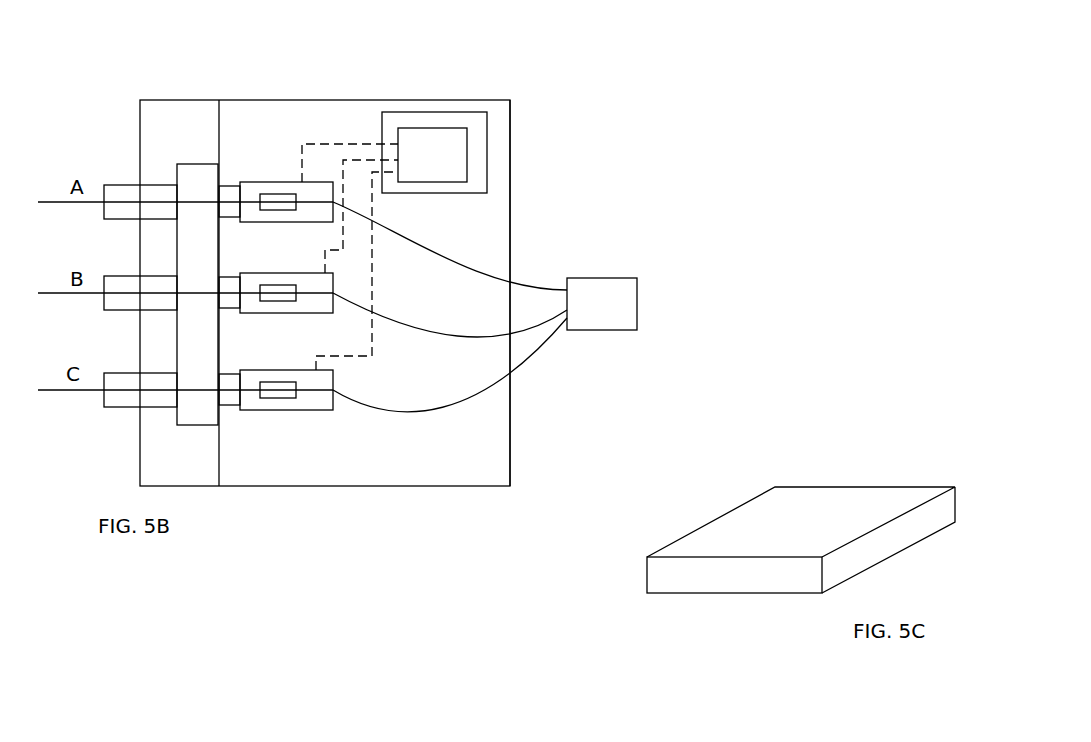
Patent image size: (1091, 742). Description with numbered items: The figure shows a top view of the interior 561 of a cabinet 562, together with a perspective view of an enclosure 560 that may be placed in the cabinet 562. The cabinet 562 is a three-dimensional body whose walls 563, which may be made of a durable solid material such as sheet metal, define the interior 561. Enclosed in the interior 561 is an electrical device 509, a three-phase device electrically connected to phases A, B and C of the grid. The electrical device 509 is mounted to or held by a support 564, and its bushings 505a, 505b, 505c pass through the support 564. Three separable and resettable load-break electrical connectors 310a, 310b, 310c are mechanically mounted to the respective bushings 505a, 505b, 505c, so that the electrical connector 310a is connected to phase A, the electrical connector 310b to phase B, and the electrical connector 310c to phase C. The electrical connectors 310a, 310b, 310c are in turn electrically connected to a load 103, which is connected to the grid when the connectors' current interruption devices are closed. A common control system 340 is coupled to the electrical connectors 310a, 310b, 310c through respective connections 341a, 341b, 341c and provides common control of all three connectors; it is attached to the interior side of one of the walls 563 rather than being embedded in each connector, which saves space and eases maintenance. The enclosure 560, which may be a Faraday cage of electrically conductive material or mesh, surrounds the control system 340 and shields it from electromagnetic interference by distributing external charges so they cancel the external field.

In FIG. 5B, the load 103 is at (602, 304).
In FIG. 5B, the electrical connector 310a is at (310, 183).
In FIG. 5B, the electrical connector 310b is at (323, 282).
In FIG. 5B, the electrical connector 310c is at (310, 396).
In FIG. 5B, the control system 340 is at (432, 155).
In FIG. 5B, the connection 341a is at (348, 141).
In FIG. 5B, the connection 341b is at (343, 168).
In FIG. 5B, the connection 341c is at (375, 333).
In FIG. 5B, the bushing 505a is at (230, 187).
In FIG. 5B, the bushing 505b is at (243, 284).
In FIG. 5B, the bushing 505c is at (227, 377).
In FIG. 5B, the electrical device 509 is at (198, 170).
In FIG. 5B, the enclosure 560 is at (452, 126).
In FIG. 5C, the enclosure 560 is at (801, 502).
In FIG. 5B, the interior 561 is at (450, 331).
In FIG. 5B, the cabinet 562 is at (528, 143).
In FIG. 5B, the walls 563 is at (510, 232).
In FIG. 5B, the support 564 is at (222, 452).